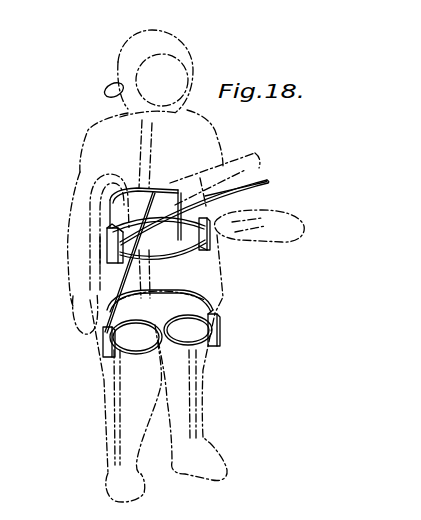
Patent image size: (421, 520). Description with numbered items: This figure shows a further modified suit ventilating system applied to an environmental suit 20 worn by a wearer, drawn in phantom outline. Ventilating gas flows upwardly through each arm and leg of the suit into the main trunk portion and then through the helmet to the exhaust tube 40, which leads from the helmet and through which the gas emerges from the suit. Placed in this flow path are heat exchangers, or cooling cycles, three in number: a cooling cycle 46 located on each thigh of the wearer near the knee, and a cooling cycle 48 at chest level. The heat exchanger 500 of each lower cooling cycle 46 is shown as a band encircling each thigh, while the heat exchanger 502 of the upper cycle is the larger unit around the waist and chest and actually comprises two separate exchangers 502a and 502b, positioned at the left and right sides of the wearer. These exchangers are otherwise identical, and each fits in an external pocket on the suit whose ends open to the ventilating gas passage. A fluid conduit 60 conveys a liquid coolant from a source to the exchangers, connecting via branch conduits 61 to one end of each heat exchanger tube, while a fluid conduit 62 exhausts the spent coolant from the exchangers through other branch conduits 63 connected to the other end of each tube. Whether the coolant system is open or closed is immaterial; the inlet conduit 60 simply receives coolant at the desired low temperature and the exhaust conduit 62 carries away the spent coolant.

The environmental suit 20 is at (218, 133).
The exhaust tube 40 is at (108, 87).
The heat exchanger of the upper cycle 502 is at (107, 211).
The heat exchanger 502a is at (106, 242).
The heat exchanger 502b is at (207, 230).
The branch conduit 63 is at (206, 247).
The fluid conduit 62 is at (266, 179).
The fluid conduit 60 is at (263, 183).
The cooling cycle 48 is at (100, 260).
The heat exchanger 500 is at (103, 341).
The cooling cycle 46 is at (107, 358).
The branch conduit 61 is at (213, 305).